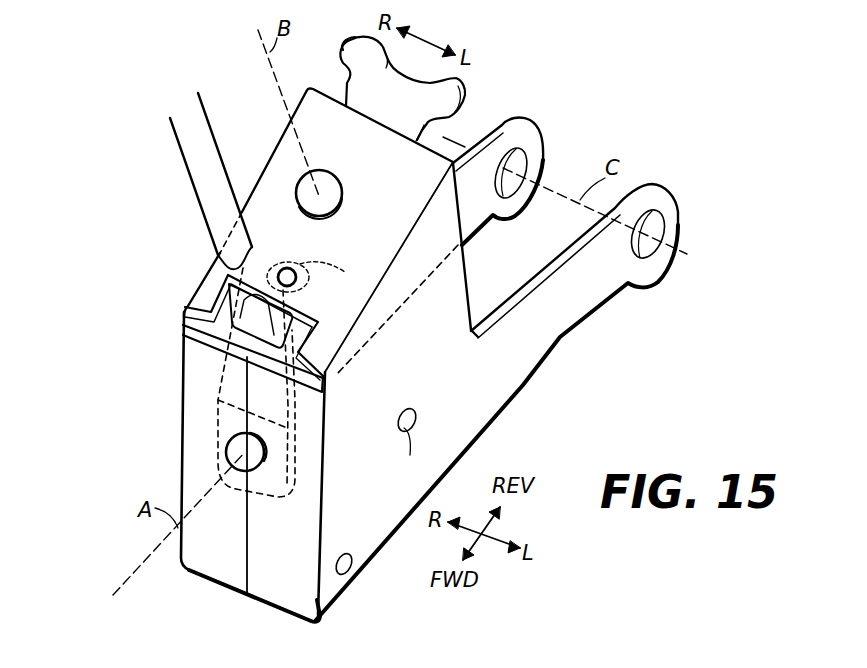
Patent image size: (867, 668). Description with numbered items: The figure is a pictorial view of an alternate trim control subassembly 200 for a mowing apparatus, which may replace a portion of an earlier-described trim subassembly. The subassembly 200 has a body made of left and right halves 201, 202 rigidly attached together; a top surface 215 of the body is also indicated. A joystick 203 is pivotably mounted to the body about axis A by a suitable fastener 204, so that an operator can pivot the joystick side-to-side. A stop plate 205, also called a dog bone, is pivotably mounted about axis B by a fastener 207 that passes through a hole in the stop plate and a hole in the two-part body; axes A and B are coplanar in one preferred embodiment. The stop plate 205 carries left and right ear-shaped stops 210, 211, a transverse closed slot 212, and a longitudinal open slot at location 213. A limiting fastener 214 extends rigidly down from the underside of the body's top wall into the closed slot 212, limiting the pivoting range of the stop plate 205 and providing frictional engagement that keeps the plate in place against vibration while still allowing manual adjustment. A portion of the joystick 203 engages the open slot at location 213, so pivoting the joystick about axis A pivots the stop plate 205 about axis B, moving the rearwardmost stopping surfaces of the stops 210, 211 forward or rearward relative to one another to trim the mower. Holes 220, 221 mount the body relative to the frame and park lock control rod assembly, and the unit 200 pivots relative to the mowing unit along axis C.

The trim control subassembly 200 is at (155, 297).
The left half 201 is at (200, 354).
The right half 202 is at (480, 383).
The joystick 203 is at (207, 205).
The fastener 204 is at (235, 452).
The stop plate 205 is at (393, 97).
The fastener 207 is at (322, 196).
The left stop 210 is at (447, 96).
The right stop 211 is at (356, 52).
The closed slot 212 is at (274, 327).
The open slot location 213 is at (263, 328).
The limiting fastener 214 is at (296, 269).
The top surface 215 is at (267, 180).
The hole 220 is at (352, 563).
The hole 221 is at (405, 444).